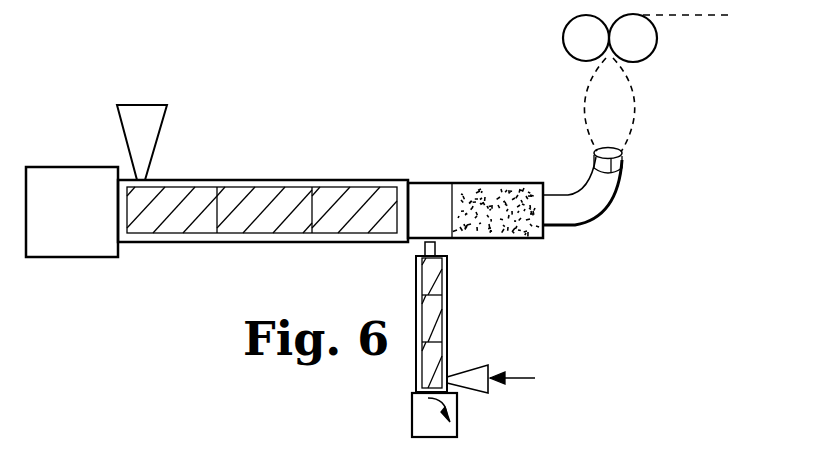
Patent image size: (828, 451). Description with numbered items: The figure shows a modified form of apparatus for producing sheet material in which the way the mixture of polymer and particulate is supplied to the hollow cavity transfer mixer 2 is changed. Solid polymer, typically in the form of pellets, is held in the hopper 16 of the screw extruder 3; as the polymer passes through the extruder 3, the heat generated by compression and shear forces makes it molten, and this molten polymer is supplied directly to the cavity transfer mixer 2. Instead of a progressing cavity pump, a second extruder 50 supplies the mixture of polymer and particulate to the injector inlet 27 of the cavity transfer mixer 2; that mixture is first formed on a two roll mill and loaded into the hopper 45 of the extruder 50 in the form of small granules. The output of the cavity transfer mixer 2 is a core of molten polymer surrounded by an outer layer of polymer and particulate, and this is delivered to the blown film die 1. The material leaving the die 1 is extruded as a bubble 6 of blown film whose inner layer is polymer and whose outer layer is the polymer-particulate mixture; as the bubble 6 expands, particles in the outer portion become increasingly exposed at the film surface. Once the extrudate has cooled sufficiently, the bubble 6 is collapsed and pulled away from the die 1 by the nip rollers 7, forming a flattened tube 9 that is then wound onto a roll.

The blown film die 1 is at (618, 177).
The hollow cavity transfer mixer 2 is at (522, 238).
The screw extruder 3 is at (278, 187).
The bubble 6 is at (634, 88).
The nip rollers 7 is at (643, 40).
The flattened tube 9 is at (713, 15).
The hopper 16 is at (140, 143).
The injector inlet 27 is at (438, 246).
The hopper 45 is at (470, 383).
The extruder 50 is at (445, 333).